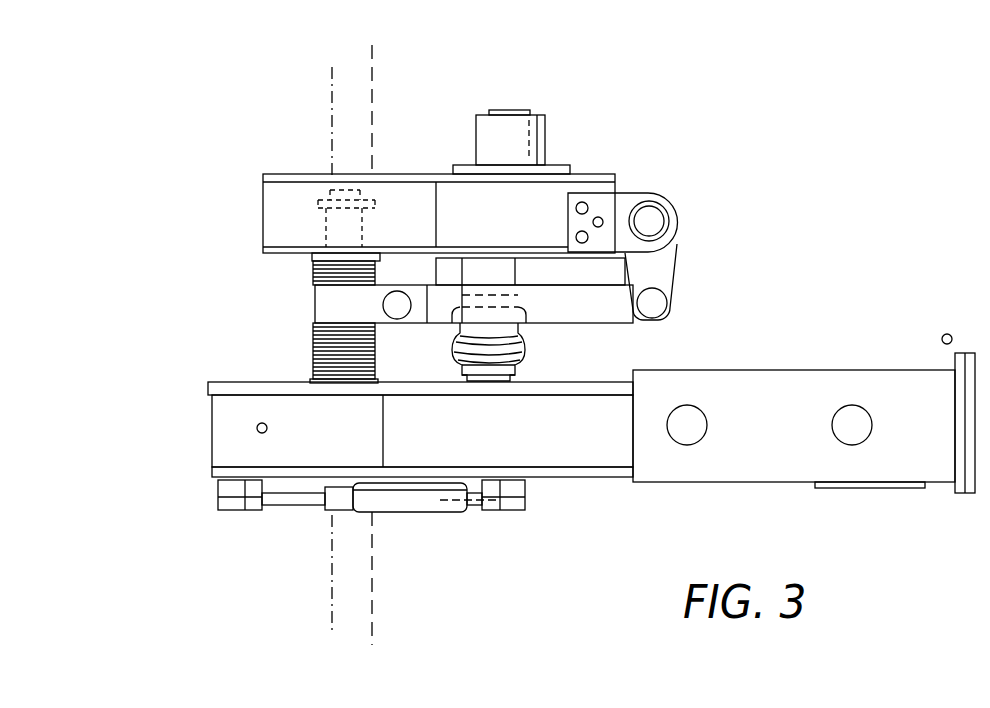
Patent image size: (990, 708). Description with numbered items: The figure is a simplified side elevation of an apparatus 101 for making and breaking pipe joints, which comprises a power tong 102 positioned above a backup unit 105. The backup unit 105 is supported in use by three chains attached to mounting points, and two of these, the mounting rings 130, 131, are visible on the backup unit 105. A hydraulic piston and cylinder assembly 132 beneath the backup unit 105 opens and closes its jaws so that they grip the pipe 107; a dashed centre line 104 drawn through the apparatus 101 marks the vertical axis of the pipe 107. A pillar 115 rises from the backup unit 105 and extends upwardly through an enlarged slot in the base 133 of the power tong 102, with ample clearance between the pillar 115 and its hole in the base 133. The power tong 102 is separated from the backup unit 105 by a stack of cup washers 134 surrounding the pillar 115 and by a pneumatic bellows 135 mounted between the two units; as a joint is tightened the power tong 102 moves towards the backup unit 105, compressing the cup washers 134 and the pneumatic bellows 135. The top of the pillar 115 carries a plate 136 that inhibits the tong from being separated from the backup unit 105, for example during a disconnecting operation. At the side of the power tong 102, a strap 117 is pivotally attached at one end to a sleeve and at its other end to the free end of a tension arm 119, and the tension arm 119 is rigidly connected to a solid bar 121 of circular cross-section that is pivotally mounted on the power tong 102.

The apparatus 101 is at (253, 183).
The power tong 102 is at (598, 172).
The axis 104 is at (445, 58).
The backup unit 105 is at (297, 476).
The pipe 107 is at (363, 613).
The pillar 115 is at (313, 352).
The strap 117 is at (427, 338).
The tension arm 119 is at (748, 264).
The solid bar 121 is at (750, 194).
The mounting ring 130 is at (947, 334).
The mounting ring 131 is at (257, 428).
The hydraulic piston and cylinder assembly 132 is at (418, 495).
The base 133 is at (300, 251).
The cup washers 134 is at (316, 382).
The pneumatic bellows 135 is at (527, 352).
The plate 136 is at (318, 208).